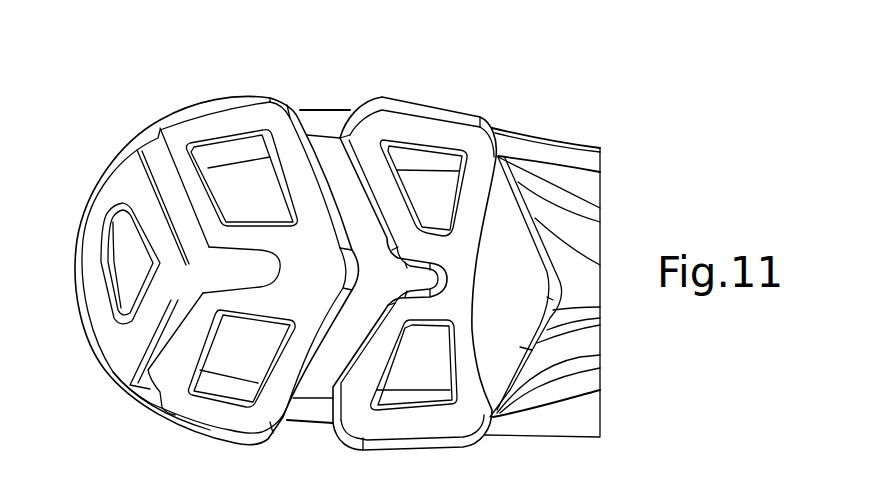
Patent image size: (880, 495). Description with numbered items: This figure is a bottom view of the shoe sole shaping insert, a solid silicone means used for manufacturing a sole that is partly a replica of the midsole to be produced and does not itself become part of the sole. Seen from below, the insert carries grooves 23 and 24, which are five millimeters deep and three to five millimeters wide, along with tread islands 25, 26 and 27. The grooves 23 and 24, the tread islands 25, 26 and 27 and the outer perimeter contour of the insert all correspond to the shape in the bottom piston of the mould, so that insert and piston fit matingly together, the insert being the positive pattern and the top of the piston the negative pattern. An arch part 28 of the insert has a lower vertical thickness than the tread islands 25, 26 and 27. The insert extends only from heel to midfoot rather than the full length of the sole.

The groove 23 is at (322, 153).
The groove 24 is at (150, 143).
The tread island 25 is at (100, 307).
The tread island 26 is at (198, 412).
The tread island 27 is at (477, 403).
The arch part 28 is at (577, 108).